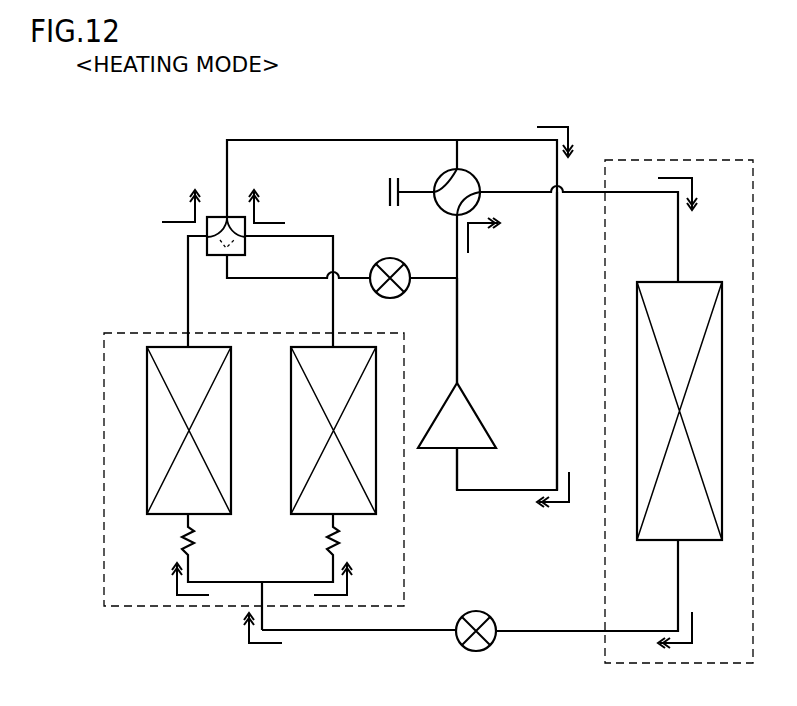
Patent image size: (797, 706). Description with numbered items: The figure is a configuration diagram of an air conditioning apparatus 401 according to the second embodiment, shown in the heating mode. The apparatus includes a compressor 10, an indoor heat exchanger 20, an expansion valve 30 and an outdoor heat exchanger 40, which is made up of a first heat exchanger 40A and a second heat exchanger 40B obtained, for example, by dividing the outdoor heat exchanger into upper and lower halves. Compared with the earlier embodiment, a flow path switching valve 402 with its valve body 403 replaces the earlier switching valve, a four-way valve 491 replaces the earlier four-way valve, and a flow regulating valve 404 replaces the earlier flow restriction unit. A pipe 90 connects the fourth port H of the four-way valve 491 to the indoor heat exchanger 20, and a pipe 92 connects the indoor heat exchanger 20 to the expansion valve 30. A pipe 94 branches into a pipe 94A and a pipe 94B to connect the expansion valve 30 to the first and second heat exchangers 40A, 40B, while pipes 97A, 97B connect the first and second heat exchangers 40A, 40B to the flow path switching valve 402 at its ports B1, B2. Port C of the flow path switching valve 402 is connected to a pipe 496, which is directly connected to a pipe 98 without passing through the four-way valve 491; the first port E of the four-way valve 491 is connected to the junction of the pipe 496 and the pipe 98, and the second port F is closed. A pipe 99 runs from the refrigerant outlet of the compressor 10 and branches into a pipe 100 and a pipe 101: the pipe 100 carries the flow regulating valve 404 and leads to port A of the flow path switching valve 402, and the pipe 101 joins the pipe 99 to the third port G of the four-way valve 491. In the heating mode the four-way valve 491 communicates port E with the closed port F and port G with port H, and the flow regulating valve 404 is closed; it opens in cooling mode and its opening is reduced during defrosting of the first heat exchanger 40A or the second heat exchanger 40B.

The air conditioning apparatus 401 is at (177, 118).
The pipe 496 is at (290, 138).
The four-way valve 491 is at (447, 168).
The flow path switching valve 402 is at (220, 207).
The valve body 403 is at (220, 258).
The flow regulating valve 404 is at (406, 291).
The pipe 90 is at (527, 194).
The pipe 92 is at (554, 628).
The pipe 94 is at (393, 632).
The pipe 94A is at (223, 584).
The pipe 94B is at (298, 584).
The pipe 97A is at (188, 313).
The pipe 97B is at (333, 313).
The pipe 98 is at (557, 253).
The pipe 99 is at (458, 347).
The pipe 100 is at (358, 273).
The pipe 101 is at (460, 263).
The compressor 10 is at (476, 415).
The indoor heat exchanger 20 is at (692, 282).
The expansion valve 30 is at (480, 648).
The outdoor heat exchanger 40 is at (259, 498).
The first heat exchanger 40A is at (158, 518).
The second heat exchanger 40B is at (364, 518).
The port A is at (228, 255).
The port B1 is at (206, 235).
The port B2 is at (246, 237).
The port C is at (228, 215).
The first port E is at (458, 171).
The second port F is at (437, 190).
The third port G is at (457, 213).
The fourth port H is at (481, 193).